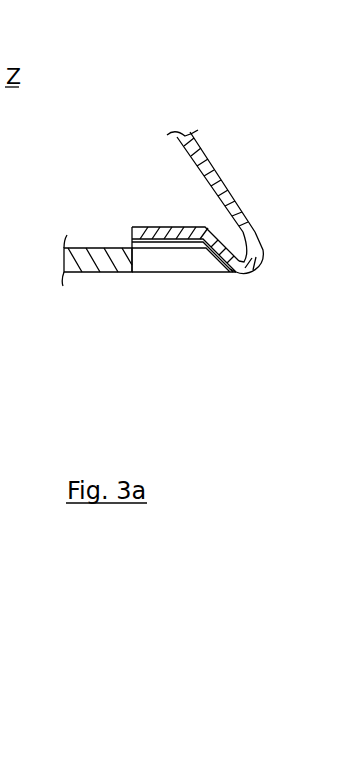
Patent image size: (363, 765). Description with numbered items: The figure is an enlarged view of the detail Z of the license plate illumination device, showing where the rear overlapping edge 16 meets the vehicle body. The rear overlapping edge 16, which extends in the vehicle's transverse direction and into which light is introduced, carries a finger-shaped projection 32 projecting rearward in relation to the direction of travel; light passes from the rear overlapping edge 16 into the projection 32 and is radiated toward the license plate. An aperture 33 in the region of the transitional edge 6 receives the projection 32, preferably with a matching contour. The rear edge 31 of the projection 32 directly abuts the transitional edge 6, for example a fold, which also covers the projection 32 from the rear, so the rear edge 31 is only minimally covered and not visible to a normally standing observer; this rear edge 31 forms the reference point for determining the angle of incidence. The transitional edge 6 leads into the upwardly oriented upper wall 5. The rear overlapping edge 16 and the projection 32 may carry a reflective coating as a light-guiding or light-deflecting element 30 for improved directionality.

The upper wall 5 is at (223, 186).
The transitional edge 6 is at (258, 272).
The rear overlapping edge 16 is at (97, 262).
The light-guiding and/or light-deflecting element 30 is at (158, 241).
The rear edge 31 is at (226, 272).
The finger-shaped projection 32 is at (178, 262).
The aperture 33 is at (236, 275).